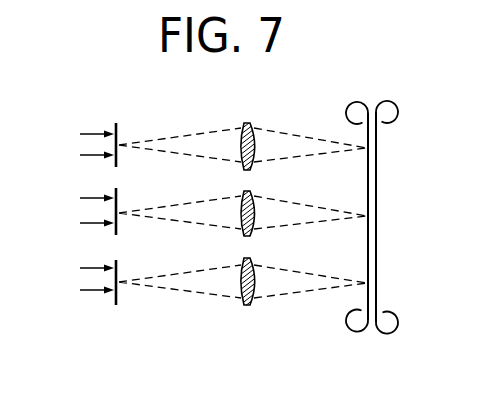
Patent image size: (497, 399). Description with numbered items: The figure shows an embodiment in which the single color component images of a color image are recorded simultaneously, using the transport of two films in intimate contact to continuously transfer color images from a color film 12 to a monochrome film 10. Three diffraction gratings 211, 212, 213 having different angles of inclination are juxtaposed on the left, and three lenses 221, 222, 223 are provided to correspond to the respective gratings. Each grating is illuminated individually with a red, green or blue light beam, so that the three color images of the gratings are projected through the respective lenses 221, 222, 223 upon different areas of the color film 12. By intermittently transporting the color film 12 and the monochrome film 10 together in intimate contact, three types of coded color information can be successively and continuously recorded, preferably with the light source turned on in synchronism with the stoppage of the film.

The monochrome film 10 is at (342, 244).
The color film 12 is at (350, 327).
The diffraction grating 211 is at (113, 302).
The diffraction grating 212 is at (113, 231).
The diffraction grating 213 is at (113, 163).
The lens 221 is at (241, 276).
The lens 222 is at (254, 199).
The lens 223 is at (241, 141).